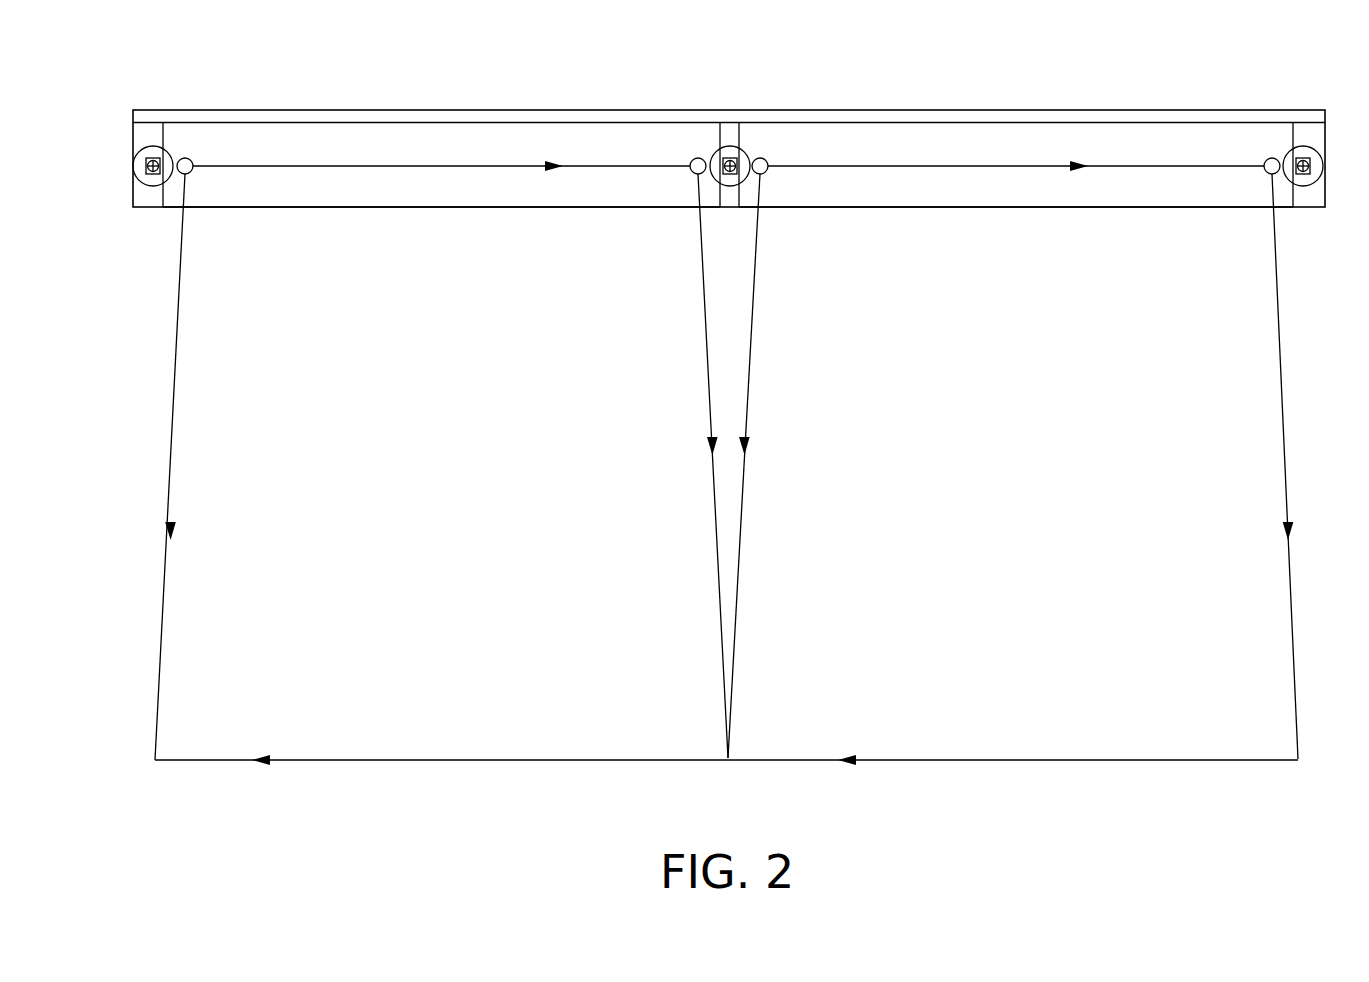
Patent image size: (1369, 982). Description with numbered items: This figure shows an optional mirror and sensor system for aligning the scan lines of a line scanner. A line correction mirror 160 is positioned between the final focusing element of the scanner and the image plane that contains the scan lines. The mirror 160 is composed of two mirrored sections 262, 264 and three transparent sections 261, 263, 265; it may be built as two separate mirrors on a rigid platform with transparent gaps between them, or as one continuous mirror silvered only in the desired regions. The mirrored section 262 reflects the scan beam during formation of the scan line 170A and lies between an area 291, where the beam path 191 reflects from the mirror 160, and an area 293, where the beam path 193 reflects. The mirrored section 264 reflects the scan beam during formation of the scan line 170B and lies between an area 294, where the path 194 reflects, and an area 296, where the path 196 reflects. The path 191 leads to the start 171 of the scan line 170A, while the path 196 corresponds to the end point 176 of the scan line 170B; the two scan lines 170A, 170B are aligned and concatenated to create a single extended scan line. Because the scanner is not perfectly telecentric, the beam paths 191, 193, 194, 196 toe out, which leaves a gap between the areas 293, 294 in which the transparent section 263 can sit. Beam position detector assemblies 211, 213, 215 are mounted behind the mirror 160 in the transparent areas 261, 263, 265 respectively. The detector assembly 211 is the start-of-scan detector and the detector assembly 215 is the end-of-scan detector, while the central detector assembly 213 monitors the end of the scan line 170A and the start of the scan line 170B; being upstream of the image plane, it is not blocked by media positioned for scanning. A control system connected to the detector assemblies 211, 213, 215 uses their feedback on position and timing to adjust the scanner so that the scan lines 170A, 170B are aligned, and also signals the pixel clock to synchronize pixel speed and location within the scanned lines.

The line correction mirror 160 is at (1023, 110).
The mirrored section 262 is at (972, 208).
The mirrored section 264 is at (487, 208).
The transparent section 261 is at (1303, 208).
The transparent section 263 is at (728, 210).
The transparent section 265 is at (152, 210).
The beam position detector assembly 211 is at (1313, 150).
The central detector assembly 213 is at (730, 147).
The beam position detector assembly 215 is at (143, 157).
The area 291 is at (1267, 155).
The area 293 is at (765, 158).
The area 294 is at (698, 158).
The area 296 is at (186, 158).
The path 191 is at (1290, 450).
The path 193 is at (757, 303).
The path 194 is at (703, 303).
The path 196 is at (169, 449).
The scan line 170A is at (1113, 759).
The scan line 170B is at (342, 760).
The start of scan line 171 is at (1298, 760).
The end point of scan line 176 is at (155, 760).